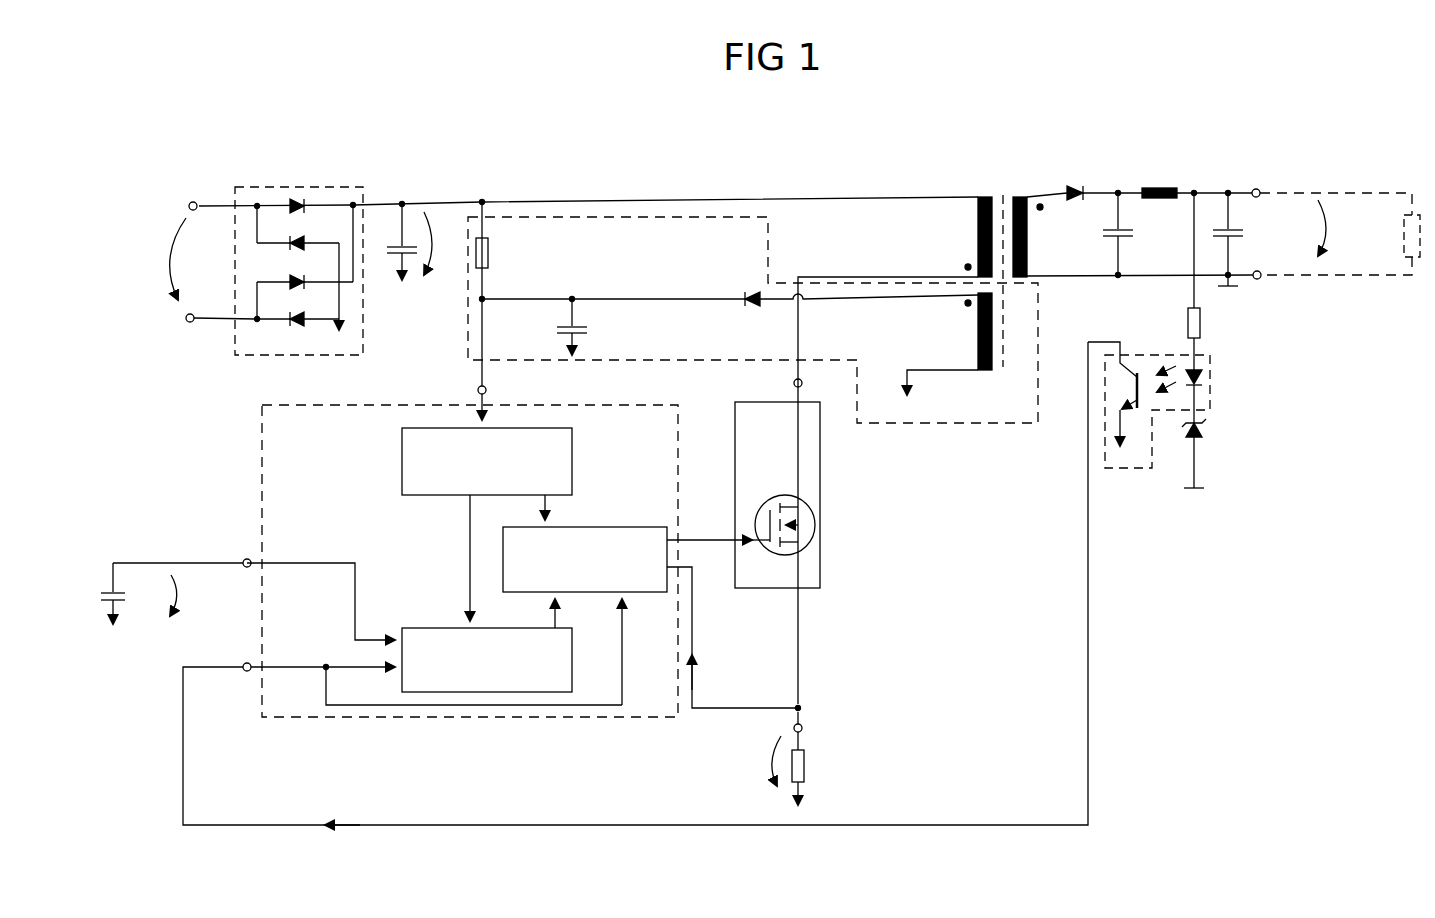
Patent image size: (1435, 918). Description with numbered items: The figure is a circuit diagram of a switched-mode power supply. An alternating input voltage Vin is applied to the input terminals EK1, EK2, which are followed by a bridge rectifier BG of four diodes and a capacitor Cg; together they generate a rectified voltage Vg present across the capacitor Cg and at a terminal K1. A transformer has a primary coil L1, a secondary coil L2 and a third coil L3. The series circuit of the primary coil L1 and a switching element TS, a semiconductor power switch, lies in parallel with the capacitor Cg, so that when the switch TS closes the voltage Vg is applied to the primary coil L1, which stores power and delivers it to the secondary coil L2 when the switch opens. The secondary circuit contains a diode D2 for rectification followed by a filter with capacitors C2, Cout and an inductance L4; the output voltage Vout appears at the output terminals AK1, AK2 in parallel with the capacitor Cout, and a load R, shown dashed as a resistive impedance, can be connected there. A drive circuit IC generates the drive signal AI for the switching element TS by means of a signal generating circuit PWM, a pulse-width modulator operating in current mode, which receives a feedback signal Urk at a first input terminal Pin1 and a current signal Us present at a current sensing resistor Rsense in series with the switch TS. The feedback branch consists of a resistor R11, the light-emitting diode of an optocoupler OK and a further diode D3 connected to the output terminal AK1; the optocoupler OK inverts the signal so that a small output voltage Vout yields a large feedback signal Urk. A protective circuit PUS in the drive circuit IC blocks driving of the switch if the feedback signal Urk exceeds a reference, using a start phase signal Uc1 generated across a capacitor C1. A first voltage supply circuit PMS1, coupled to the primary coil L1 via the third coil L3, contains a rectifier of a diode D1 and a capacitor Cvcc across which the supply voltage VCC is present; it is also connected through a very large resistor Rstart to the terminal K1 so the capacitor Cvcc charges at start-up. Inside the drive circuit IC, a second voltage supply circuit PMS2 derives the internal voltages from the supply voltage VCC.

The input terminal EK1 is at (186, 187).
The input terminal EK2 is at (208, 336).
The input voltage Vin is at (153, 259).
The bridge rectifier BG is at (299, 253).
The capacitor Cg is at (392, 241).
The rectified voltage Vg is at (445, 243).
The terminal K1 is at (484, 184).
The first voltage supply circuit PMS1 is at (637, 215).
The resistor Rstart is at (531, 268).
The capacitor Cvcc is at (604, 326).
The diode D1 is at (754, 316).
The primary coil L1 is at (966, 237).
The secondary coil L2 is at (1040, 237).
The third coil L3 is at (967, 331).
The diode D2 is at (1074, 177).
The capacitor C2 is at (1139, 234).
The inductance L4 is at (1159, 176).
The capacitor Cout is at (1261, 239).
The output terminal AK1 is at (1292, 175).
The output terminal AK2 is at (1293, 290).
The output voltage Vout is at (1352, 228).
The load R is at (1347, 234).
The resistor R11 is at (1222, 281).
The optocoupler OK is at (1175, 405).
The further diode D3 is at (1221, 453).
The supply voltage VCC is at (455, 379).
The drive circuit IC is at (470, 561).
The second voltage supply circuit PMS2 is at (489, 524).
The signal generating circuit PWM is at (650, 617).
The protective circuit PUS is at (434, 634).
The drive signal AI is at (718, 522).
The switching element TS is at (777, 483).
The current sensing resistor Rsense is at (850, 758).
The current signal Us is at (754, 761).
The feedback signal Urk is at (325, 856).
The capacitor C1 is at (172, 593).
The start phase signal Uc1 is at (210, 587).
The first input terminal Pin1 is at (224, 652).